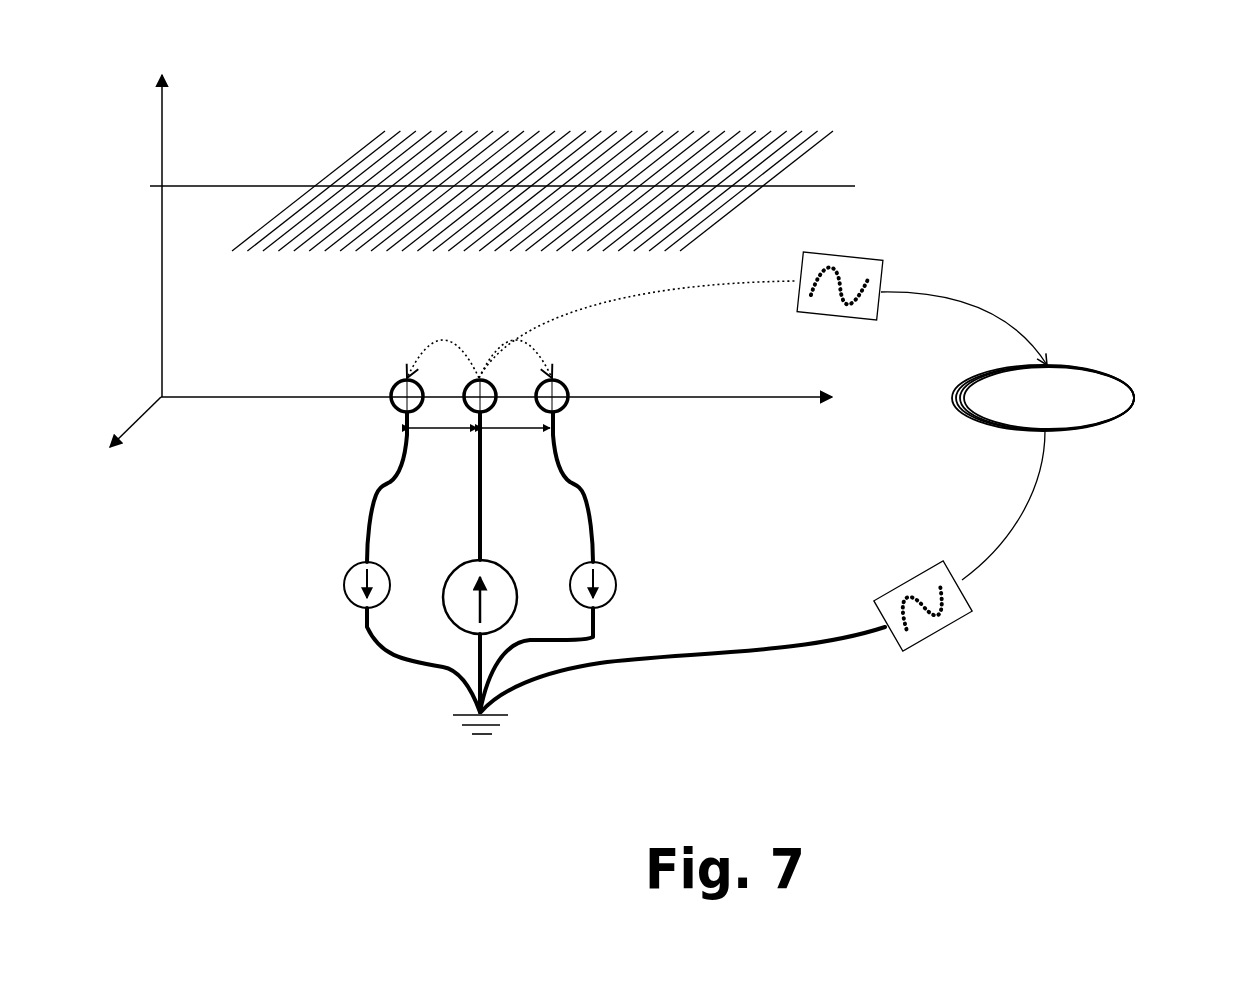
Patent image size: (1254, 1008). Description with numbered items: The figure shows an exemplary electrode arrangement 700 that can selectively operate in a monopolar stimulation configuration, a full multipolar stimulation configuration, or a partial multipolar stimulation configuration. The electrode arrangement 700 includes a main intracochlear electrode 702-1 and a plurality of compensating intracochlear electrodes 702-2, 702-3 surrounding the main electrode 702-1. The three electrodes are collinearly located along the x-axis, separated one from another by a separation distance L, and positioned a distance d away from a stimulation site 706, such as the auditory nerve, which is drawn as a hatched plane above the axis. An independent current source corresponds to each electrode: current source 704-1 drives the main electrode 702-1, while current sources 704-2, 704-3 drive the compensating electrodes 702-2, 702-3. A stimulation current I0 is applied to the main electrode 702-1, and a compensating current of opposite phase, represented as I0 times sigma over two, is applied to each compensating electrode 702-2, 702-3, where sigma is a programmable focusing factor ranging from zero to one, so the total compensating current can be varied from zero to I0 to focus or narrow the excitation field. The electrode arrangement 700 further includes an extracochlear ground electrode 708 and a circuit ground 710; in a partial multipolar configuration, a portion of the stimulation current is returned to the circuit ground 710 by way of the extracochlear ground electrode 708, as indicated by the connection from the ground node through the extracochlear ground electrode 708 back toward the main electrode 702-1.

The electrode arrangement 700 is at (1125, 113).
The main intracochlear electrode 702-1 is at (477, 379).
The compensating intracochlear electrode 702-2 is at (397, 384).
The compensating intracochlear electrode 702-3 is at (563, 384).
The current source 704-1 is at (455, 574).
The current source 704-2 is at (350, 571).
The current source 704-3 is at (575, 571).
The stimulation site 706 is at (714, 106).
The extracochlear ground electrode 708 is at (1097, 368).
The circuit ground 710 is at (470, 727).